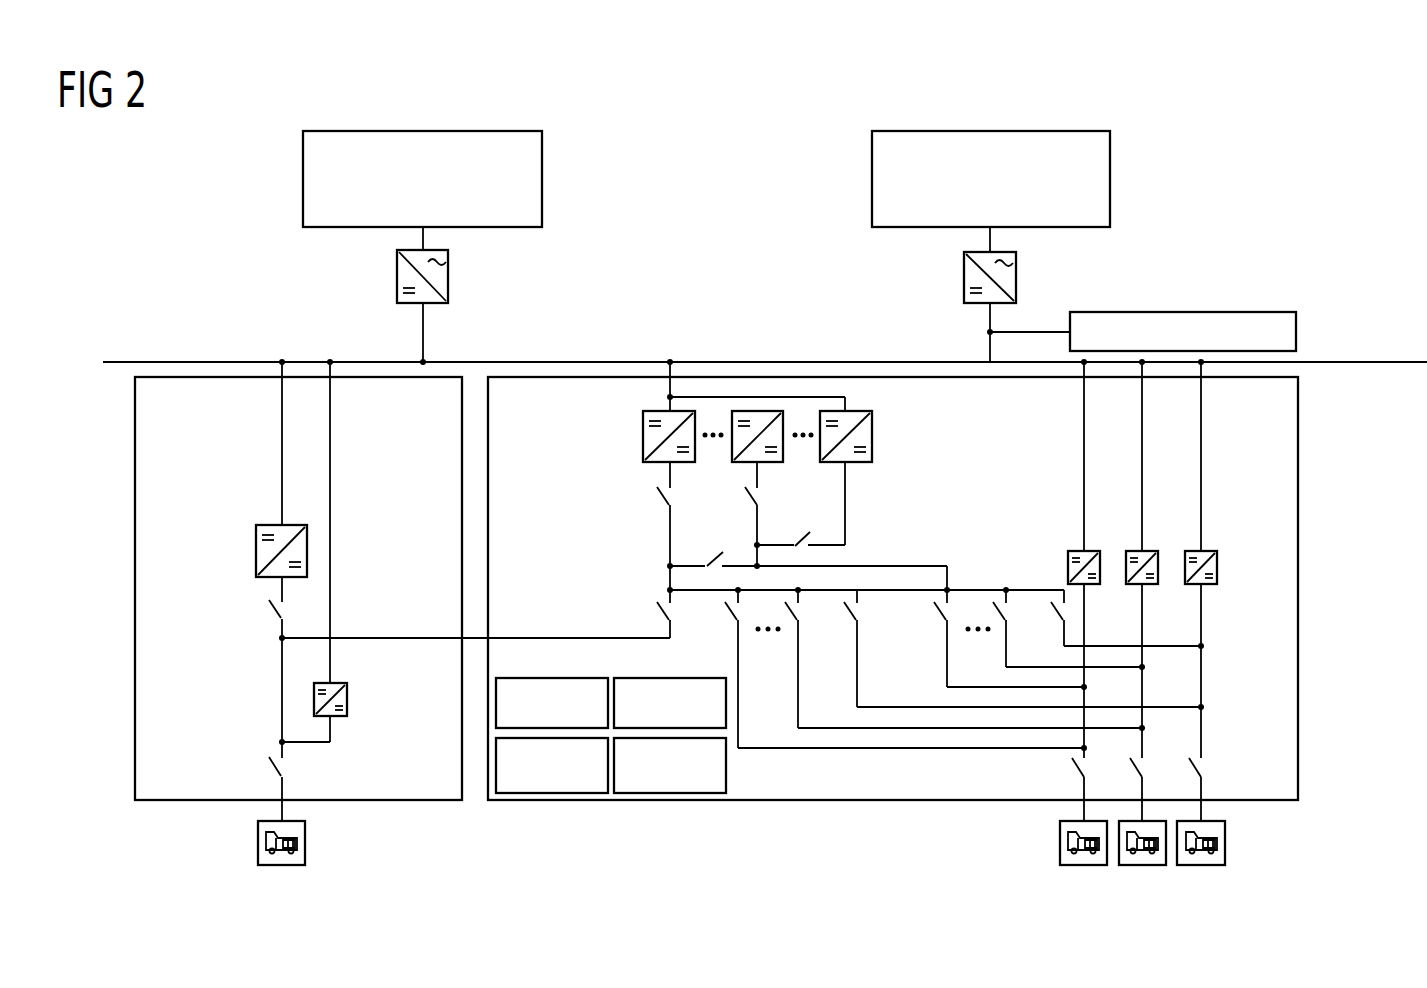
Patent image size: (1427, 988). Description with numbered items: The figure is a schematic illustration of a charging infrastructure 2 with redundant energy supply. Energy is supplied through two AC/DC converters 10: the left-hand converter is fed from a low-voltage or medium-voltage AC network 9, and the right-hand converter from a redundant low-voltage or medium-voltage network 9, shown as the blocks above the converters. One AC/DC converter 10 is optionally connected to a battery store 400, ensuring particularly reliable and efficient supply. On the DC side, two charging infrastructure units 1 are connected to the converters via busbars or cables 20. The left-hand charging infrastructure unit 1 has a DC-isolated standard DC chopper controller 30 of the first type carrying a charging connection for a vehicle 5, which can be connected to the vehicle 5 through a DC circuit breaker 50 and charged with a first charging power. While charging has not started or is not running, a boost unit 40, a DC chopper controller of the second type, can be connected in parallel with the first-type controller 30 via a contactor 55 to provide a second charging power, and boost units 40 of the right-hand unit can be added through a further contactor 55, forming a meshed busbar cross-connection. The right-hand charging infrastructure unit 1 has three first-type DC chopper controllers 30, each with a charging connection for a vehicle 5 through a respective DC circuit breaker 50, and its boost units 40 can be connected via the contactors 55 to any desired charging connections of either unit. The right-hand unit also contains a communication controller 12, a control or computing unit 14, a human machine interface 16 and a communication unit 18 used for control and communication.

The charging infrastructure unit 1 is at (135, 418).
The charging infrastructure 2 is at (699, 140).
The vehicle 5 is at (283, 870).
The low-voltage network or medium-voltage network 9 is at (542, 172).
The AC/DC converter 10 is at (448, 272).
The communication controller 12 is at (537, 721).
The control or computing unit 14 is at (655, 721).
The human machine interface 16 is at (537, 783).
The communication unit 18 is at (655, 783).
The busbar or cable 20 is at (612, 360).
The DC-isolated DC chopper controller of the first type 30 is at (348, 698).
The boost unit 40 is at (256, 553).
The DC circuit breaker 50 is at (269, 764).
The contactor 55 is at (270, 608).
The battery store 400 is at (1181, 310).